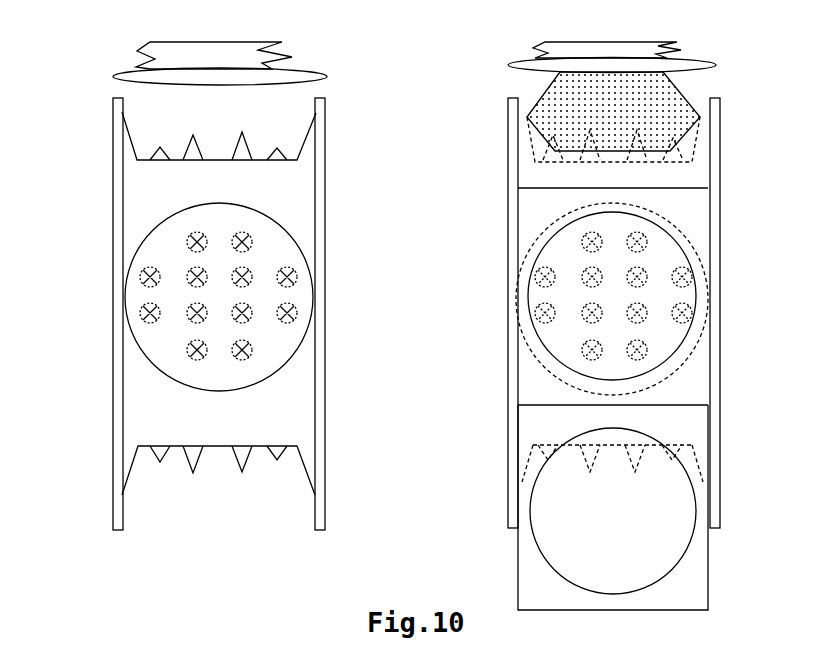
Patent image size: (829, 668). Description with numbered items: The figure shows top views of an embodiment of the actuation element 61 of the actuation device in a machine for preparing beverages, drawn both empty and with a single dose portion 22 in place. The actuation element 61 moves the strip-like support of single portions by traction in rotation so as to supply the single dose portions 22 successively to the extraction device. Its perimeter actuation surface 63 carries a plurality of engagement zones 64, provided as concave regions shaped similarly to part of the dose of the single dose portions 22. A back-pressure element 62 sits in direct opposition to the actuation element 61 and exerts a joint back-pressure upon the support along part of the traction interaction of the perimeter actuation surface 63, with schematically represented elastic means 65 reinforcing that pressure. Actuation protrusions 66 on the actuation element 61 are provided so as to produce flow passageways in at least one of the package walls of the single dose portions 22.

The single dose portion 22 is at (675, 127).
The actuation element 61 is at (390, 304).
The back-pressure element 62 is at (304, 79).
The perimeter actuation surface 63 is at (136, 205).
The engagement zone 64 is at (141, 135).
The elastic means 65 is at (254, 56).
The actuation protrusion 66 is at (242, 127).